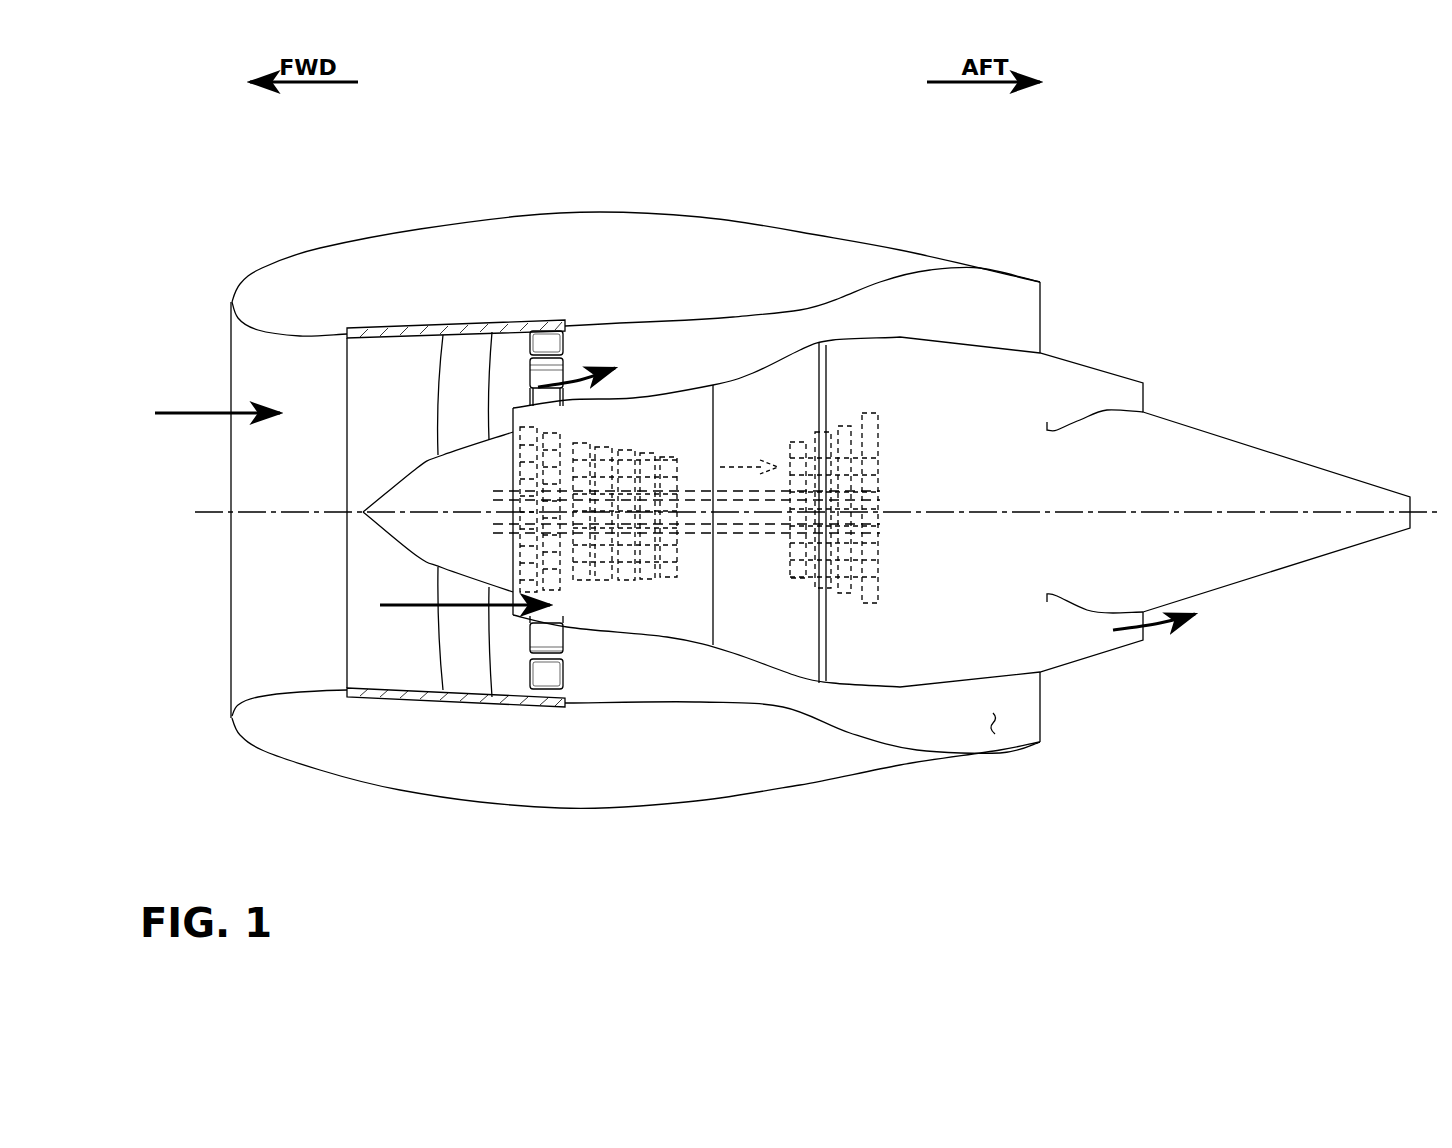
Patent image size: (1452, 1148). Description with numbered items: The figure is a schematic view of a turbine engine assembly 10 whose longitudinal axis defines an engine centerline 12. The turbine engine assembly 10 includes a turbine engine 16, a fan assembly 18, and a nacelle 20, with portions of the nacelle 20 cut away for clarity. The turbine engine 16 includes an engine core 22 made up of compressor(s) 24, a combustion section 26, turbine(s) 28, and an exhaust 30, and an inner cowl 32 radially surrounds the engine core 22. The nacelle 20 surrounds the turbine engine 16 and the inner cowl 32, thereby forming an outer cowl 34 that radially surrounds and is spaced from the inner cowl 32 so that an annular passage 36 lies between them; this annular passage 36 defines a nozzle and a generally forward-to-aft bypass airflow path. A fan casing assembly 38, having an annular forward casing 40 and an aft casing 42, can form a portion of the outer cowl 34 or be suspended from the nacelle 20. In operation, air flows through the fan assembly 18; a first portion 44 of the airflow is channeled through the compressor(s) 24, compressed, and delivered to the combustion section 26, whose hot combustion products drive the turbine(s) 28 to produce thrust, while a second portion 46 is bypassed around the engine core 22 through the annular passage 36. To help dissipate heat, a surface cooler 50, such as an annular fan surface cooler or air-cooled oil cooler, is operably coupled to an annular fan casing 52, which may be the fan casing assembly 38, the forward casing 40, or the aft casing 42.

The turbine engine assembly 10 is at (478, 150).
The engine centerline 12 is at (210, 513).
The turbine engine 16 is at (692, 413).
The fan assembly 18 is at (457, 352).
The nacelle 20 is at (320, 243).
The engine core 22 is at (701, 600).
The compressor 24 is at (620, 567).
The combustion section 26 is at (743, 550).
The turbine 28 is at (843, 592).
The exhaust 30 is at (1157, 632).
The inner cowl 32 is at (830, 343).
The outer cowl 34 is at (845, 295).
The annular passage 36 is at (1000, 723).
The fan casing assembly 38 is at (355, 640).
The forward casing 40 is at (345, 600).
The aft casing 42 is at (541, 300).
The first portion of the airflow 44 is at (505, 690).
The second portion of the airflow 46 is at (590, 385).
The surface cooler 50 is at (557, 645).
The fan casing 52 is at (560, 315).